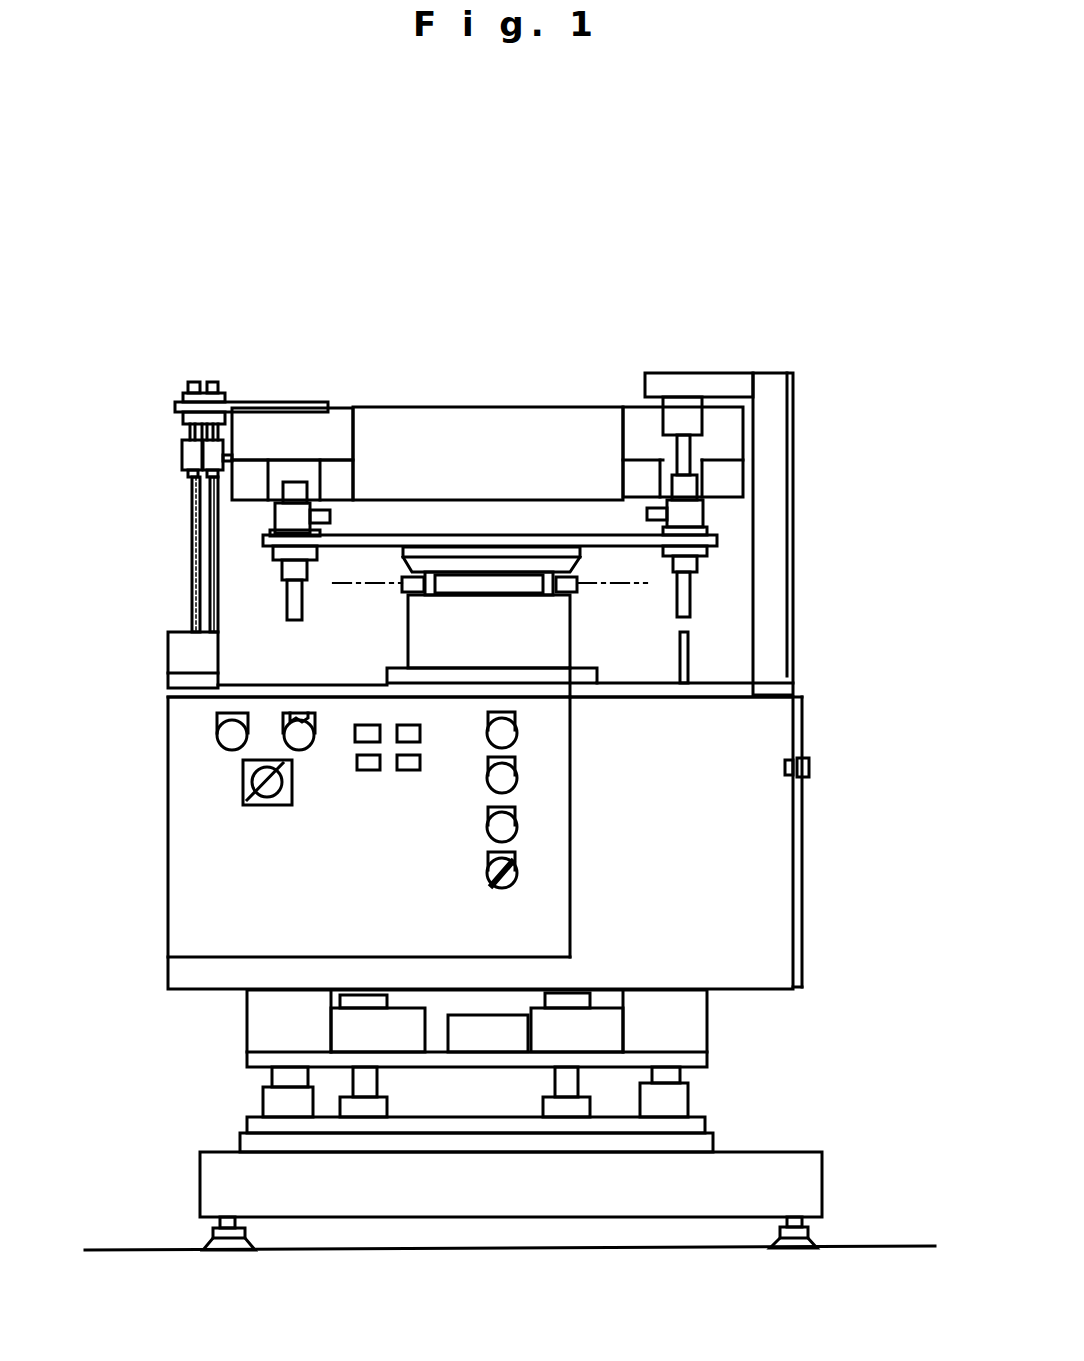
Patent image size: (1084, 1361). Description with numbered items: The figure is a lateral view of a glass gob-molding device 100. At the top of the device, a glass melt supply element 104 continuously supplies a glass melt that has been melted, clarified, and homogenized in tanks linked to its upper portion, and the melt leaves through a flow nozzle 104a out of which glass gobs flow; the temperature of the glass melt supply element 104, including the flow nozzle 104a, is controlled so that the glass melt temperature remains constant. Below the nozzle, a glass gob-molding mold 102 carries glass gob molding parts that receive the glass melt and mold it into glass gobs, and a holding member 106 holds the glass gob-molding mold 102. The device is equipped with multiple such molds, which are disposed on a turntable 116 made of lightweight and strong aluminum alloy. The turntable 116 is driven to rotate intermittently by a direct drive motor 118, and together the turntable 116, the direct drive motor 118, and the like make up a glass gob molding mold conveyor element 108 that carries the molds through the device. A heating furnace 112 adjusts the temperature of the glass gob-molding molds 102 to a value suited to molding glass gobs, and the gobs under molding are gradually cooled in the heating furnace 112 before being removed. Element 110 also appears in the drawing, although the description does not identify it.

The glass gob-molding device 100 is at (648, 245).
The glass gob-molding mold 102 is at (293, 492).
The glass melt supply element 104 is at (697, 382).
The flow nozzle 104a is at (690, 450).
The holding member 106 is at (290, 520).
The glass gob molding mold conveyor element 108 is at (512, 534).
The position sensor post 110 is at (692, 653).
The heating furnace 112 is at (290, 437).
The turntable 116 is at (357, 553).
The direct drive motor 118 is at (547, 620).